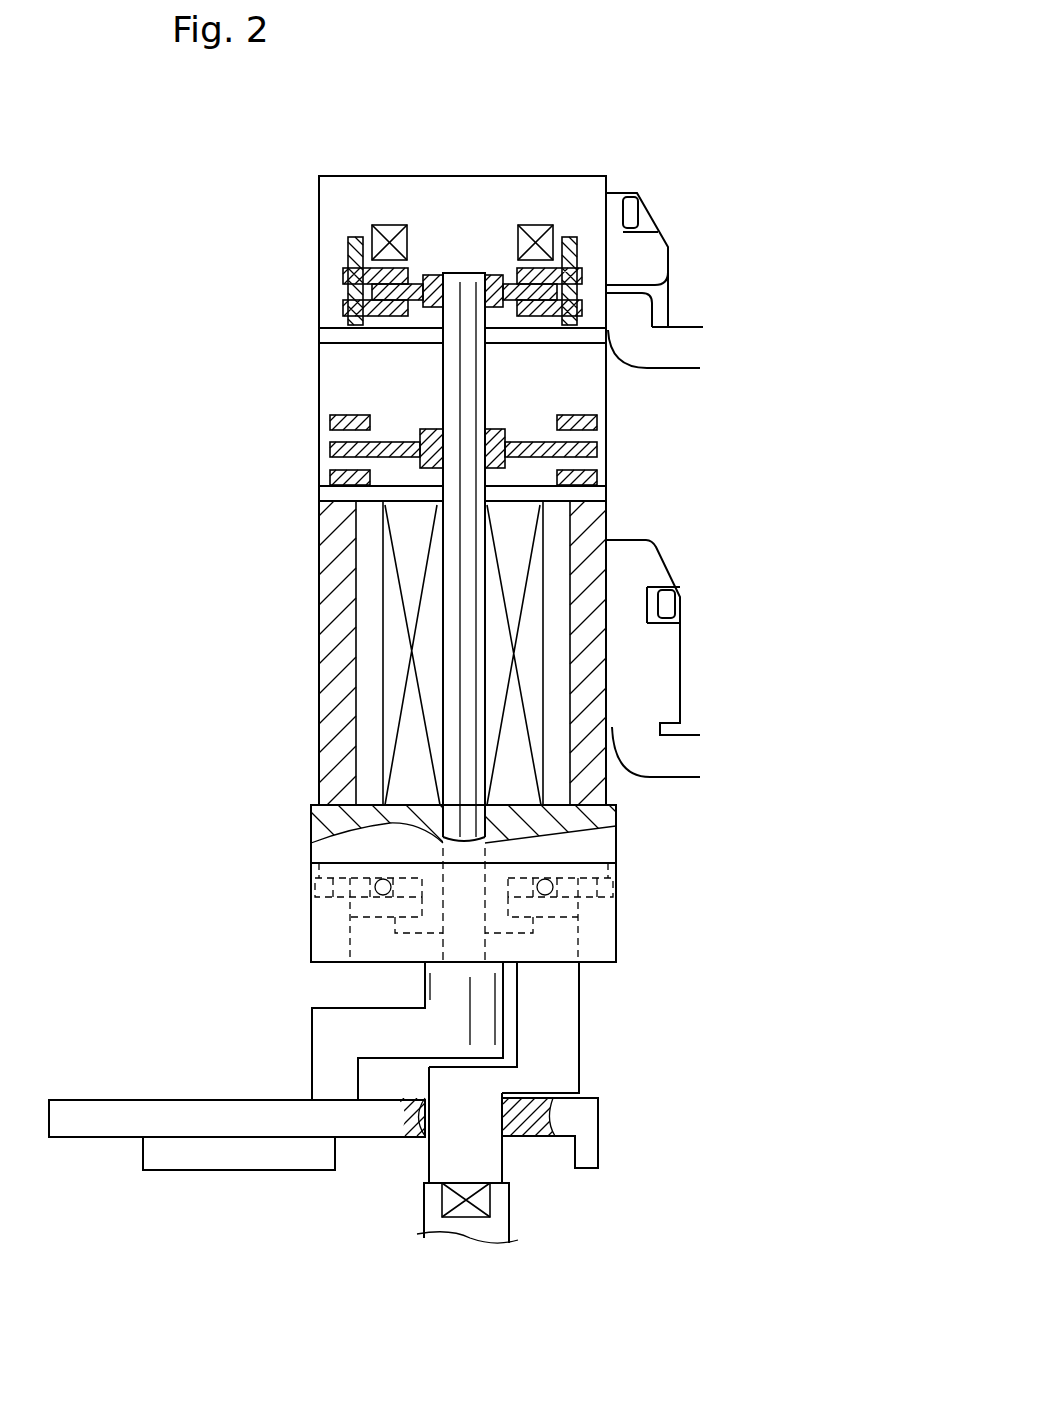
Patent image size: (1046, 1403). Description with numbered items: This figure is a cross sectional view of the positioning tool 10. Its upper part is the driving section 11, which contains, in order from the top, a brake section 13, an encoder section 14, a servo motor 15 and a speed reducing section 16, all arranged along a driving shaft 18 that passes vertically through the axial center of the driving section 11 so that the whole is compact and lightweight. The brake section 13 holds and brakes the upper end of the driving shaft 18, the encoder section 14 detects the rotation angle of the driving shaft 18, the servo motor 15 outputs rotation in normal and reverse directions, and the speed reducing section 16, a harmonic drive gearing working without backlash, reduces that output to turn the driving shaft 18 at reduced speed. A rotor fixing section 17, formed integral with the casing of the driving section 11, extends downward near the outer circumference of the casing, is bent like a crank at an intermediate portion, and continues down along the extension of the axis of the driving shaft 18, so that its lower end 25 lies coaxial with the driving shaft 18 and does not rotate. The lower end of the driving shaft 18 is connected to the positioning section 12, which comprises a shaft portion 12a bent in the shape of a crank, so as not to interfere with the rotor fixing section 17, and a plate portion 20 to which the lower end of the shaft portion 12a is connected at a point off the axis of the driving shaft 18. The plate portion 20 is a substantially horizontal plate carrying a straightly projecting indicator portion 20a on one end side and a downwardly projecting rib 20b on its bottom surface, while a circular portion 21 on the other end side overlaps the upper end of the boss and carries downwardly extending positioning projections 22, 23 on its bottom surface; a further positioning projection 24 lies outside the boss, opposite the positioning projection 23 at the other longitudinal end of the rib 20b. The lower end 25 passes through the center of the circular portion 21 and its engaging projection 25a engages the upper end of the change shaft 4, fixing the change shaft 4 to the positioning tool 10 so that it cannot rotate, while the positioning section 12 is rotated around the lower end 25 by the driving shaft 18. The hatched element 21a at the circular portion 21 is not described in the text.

The positioning tool 10 is at (295, 207).
The driving section 11 is at (319, 360).
The positioning section 12 is at (312, 1008).
The shaft portion 12a is at (490, 997).
The brake section 13 is at (535, 228).
The encoder section 14 is at (503, 430).
The servo motor 15 is at (508, 583).
The speed reducing section 16 is at (537, 908).
The rotor fixing section 17 is at (570, 1013).
The driving shaft 18 is at (463, 652).
The plate portion 20 is at (170, 1105).
The indicator portion 20a is at (87, 1105).
The rib 20b is at (230, 1153).
The circular portion 21 is at (588, 1105).
The seal portion 21a is at (427, 1115).
The positioning projection 22 is at (593, 1163).
The positioning projection 23 is at (330, 1163).
The positioning projection 24 is at (152, 1163).
The lower end 25 is at (483, 1165).
The engaging projection 25a is at (482, 1203).
The change shaft 4 is at (495, 1227).